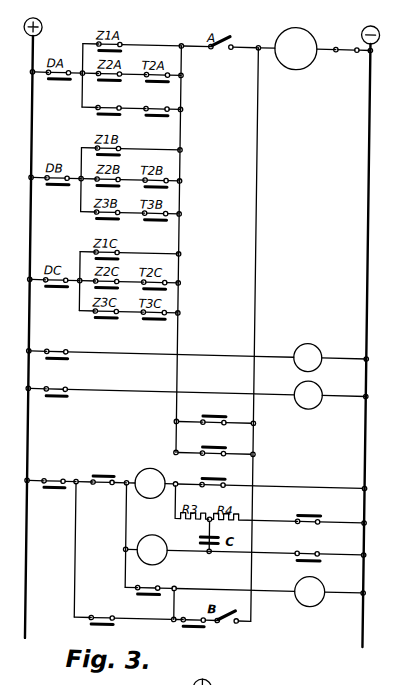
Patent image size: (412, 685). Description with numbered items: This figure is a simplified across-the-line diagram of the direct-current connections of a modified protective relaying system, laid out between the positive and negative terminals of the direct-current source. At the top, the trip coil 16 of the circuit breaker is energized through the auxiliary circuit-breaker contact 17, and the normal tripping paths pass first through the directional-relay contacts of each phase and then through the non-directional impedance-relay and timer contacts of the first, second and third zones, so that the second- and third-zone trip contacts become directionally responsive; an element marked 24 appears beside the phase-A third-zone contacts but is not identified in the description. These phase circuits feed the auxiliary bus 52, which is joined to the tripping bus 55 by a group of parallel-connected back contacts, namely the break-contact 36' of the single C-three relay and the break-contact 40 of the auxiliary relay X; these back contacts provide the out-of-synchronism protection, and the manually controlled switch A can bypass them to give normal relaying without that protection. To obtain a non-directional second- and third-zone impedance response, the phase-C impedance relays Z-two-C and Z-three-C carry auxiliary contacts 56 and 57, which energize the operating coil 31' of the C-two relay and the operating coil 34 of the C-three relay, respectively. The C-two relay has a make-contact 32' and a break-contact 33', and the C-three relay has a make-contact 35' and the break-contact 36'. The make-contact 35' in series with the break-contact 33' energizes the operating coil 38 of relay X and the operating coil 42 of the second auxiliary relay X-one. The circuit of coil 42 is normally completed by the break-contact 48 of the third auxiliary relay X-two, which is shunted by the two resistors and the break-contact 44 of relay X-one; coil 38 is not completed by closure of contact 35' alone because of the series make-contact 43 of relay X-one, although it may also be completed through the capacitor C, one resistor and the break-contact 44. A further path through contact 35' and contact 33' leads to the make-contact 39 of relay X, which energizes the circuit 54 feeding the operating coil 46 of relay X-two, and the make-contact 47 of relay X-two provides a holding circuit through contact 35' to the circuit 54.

The trip coil 16 is at (308, 38).
The auxiliary circuit-breaker contact 17 is at (354, 46).
The contact group A third row (Z3A/T3A contacts) 24 is at (119, 116).
The operating coil of auxiliary relay C2 31' is at (313, 354).
The make-contact of relay C2 32' is at (198, 625).
The break-contact of relay C2 33' is at (102, 487).
The operating coil of auxiliary relay C3 34 is at (318, 385).
The make-contact of relay C3 35' is at (52, 486).
The break-contact of relay C3 36' is at (213, 423).
The operating coil of auxiliary relay X 38 is at (160, 536).
The make-contact of relay X 39 is at (160, 587).
The break-contact of relay X 40 is at (225, 457).
The operating coil of auxiliary relay X1 42 is at (156, 468).
The make-contact of relay X1 43 is at (320, 552).
The break-contact of relay X1 44 is at (322, 524).
The operating coil of auxiliary relay X2 46 is at (317, 582).
The make-contact of relay X2 47 is at (116, 617).
The break-contact of relay X2 48 is at (225, 488).
The auxiliary bus 52 is at (177, 44).
The circuit 54 is at (202, 589).
The tripping bus 55 is at (256, 44).
The auxiliary contact of impedance relay Z2C 56 is at (70, 358).
The auxiliary contact of impedance relay Z3C 57 is at (70, 395).